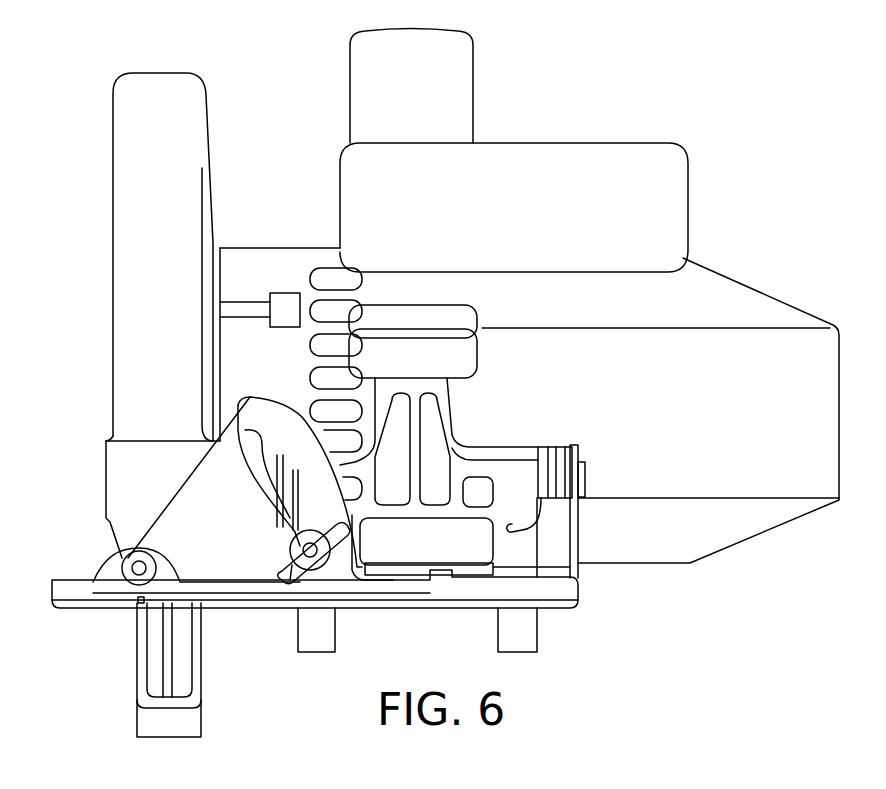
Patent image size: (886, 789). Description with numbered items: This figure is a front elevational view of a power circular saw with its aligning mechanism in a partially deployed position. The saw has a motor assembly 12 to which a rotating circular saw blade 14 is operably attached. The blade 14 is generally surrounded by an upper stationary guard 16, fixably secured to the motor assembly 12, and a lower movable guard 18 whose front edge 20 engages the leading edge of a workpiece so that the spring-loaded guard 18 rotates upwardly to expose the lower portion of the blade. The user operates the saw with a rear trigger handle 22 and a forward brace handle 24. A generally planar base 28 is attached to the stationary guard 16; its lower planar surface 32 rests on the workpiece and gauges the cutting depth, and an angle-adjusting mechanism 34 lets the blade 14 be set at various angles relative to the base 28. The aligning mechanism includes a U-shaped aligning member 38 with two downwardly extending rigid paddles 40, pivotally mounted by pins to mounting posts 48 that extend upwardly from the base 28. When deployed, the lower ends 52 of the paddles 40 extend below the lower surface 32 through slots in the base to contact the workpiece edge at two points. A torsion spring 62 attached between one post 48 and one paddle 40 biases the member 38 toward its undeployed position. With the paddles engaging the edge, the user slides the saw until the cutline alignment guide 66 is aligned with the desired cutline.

The motor assembly 12 is at (840, 404).
The circular saw blade 14 is at (168, 654).
The upper stationary guard 16 is at (120, 78).
The lower movable guard 18 is at (172, 730).
The front edge 20 is at (137, 658).
The rear trigger handle 22 is at (358, 48).
The forward brace handle 24 is at (660, 150).
The base 28 is at (62, 604).
The lower planar surface 32 is at (480, 612).
The angle-adjusting mechanism 34 is at (205, 515).
The U-shaped aligning member 38 is at (501, 450).
The paddles 40 is at (510, 550).
The mounting posts 48 is at (578, 550).
The lower ends 52 is at (335, 650).
The torsion spring 62 is at (562, 447).
The cutline alignment guide 66 is at (137, 604).